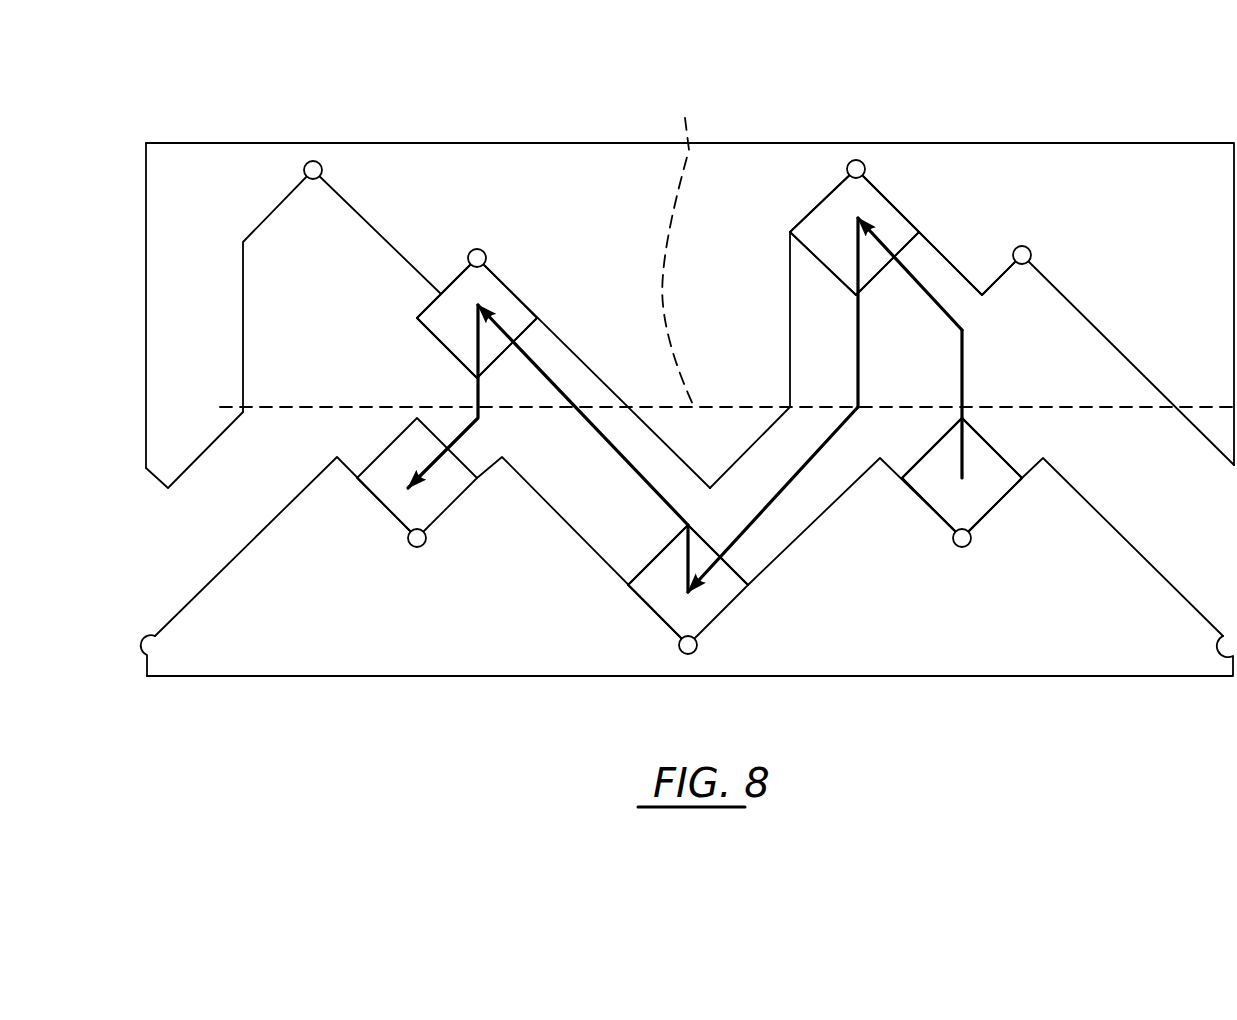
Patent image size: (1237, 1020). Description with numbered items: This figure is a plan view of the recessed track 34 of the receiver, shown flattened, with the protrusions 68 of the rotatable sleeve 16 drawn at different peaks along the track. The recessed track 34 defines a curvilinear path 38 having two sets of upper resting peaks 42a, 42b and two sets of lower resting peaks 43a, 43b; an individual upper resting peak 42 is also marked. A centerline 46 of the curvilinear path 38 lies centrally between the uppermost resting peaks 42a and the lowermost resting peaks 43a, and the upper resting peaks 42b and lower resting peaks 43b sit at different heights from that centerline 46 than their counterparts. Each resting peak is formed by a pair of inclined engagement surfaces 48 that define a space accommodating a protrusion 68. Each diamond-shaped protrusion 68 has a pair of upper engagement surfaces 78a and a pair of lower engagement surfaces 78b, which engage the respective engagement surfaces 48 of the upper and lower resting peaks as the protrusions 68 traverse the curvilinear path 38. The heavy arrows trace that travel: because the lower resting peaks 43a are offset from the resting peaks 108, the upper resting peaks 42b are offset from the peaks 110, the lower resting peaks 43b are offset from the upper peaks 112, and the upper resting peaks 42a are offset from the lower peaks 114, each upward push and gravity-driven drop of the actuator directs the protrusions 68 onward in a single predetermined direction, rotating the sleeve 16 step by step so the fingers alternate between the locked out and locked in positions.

The sleeve 16 is at (390, 141).
The recessed track 34 is at (297, 243).
The curvilinear path 38 is at (942, 268).
The hinge pin 42 is at (313, 159).
The upper resting peaks 42a is at (857, 158).
The upper resting peaks 42b is at (476, 247).
The lower resting peaks 43a is at (700, 654).
The lower resting peaks 43b is at (421, 551).
The centerline 46 is at (679, 246).
The inclined engagement surfaces 48 is at (923, 243).
The protrusions 68 is at (493, 292).
The upper engagement surfaces 78a is at (942, 437).
The lower engagement surfaces 78b is at (917, 498).
The resting peaks 108 is at (167, 470).
The peaks 110 is at (513, 458).
The upper peaks 112 is at (441, 290).
The lower peaks 114 is at (326, 457).